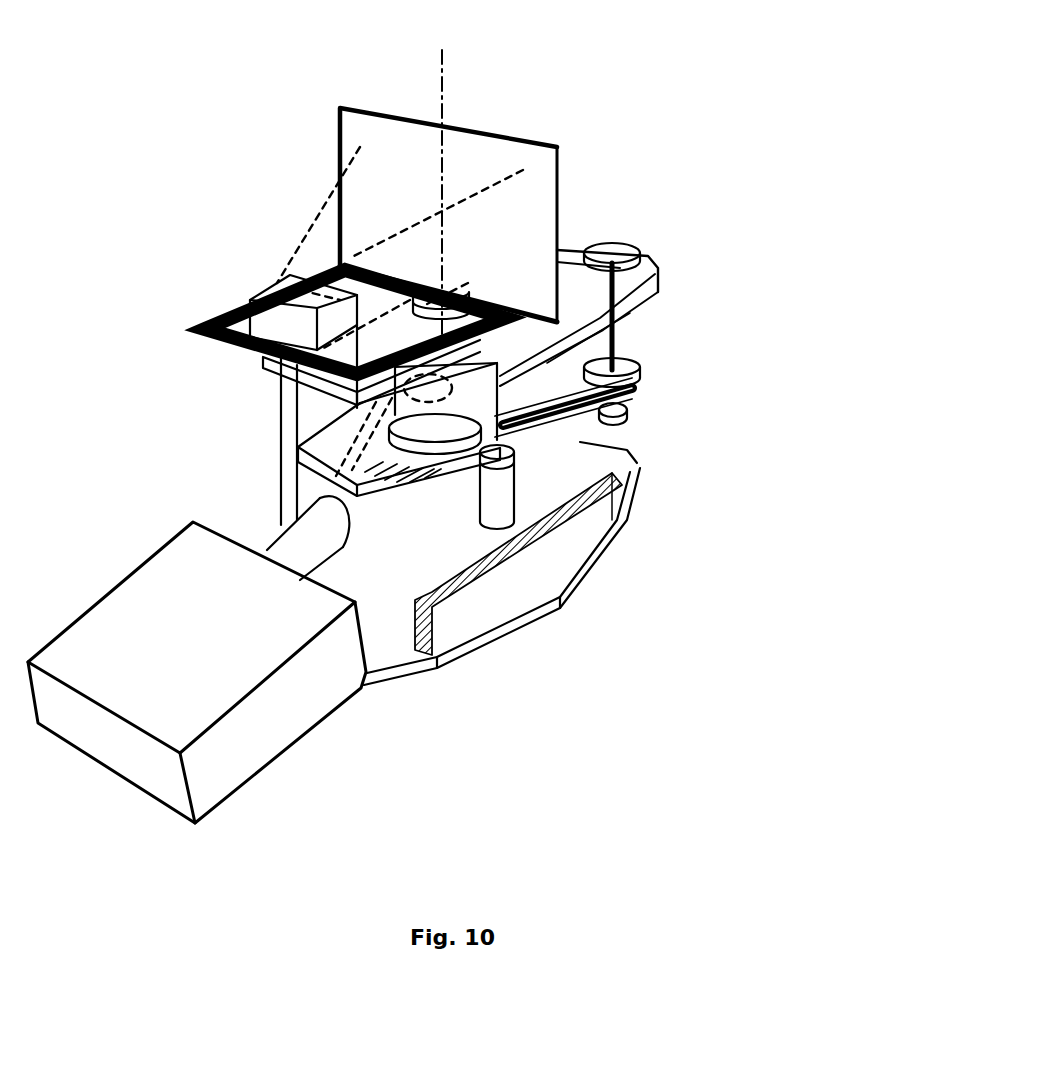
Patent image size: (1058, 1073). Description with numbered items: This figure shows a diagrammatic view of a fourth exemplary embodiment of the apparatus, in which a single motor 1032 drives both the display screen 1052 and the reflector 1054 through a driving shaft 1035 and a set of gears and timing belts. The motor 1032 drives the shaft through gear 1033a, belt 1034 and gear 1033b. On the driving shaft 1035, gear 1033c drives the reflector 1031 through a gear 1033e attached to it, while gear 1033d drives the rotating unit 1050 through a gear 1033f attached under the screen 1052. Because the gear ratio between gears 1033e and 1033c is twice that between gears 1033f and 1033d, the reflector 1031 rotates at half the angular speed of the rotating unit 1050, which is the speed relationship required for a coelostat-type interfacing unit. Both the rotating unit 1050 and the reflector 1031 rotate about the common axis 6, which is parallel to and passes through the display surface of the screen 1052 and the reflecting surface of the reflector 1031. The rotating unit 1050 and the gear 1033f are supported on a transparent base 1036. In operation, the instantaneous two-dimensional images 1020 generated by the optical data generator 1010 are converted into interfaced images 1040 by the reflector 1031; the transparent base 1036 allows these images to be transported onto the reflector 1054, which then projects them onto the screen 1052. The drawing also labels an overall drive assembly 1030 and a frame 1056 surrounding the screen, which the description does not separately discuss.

The common axis 6 is at (438, 97).
The optical data generator 1010 is at (279, 721).
The instantaneous 2D images 1020 is at (355, 445).
The drive assembly 1030 is at (815, 583).
The reflector 1031 is at (493, 505).
The motor 1032 is at (508, 470).
The gear 1033a is at (515, 478).
The gear 1033b is at (635, 411).
The gear 1033c is at (638, 357).
The gear 1033d is at (642, 243).
The gear 1033e is at (432, 455).
The gear 1033f is at (465, 283).
The belt 1034 is at (637, 468).
The driving shaft 1035 is at (622, 331).
The transparent base 1036 is at (322, 378).
The interfaced images 1040 is at (308, 222).
The rotating unit 1050 is at (225, 108).
The display screen 1052 is at (522, 132).
The reflector 1054 is at (250, 300).
The frame 1056 is at (200, 307).